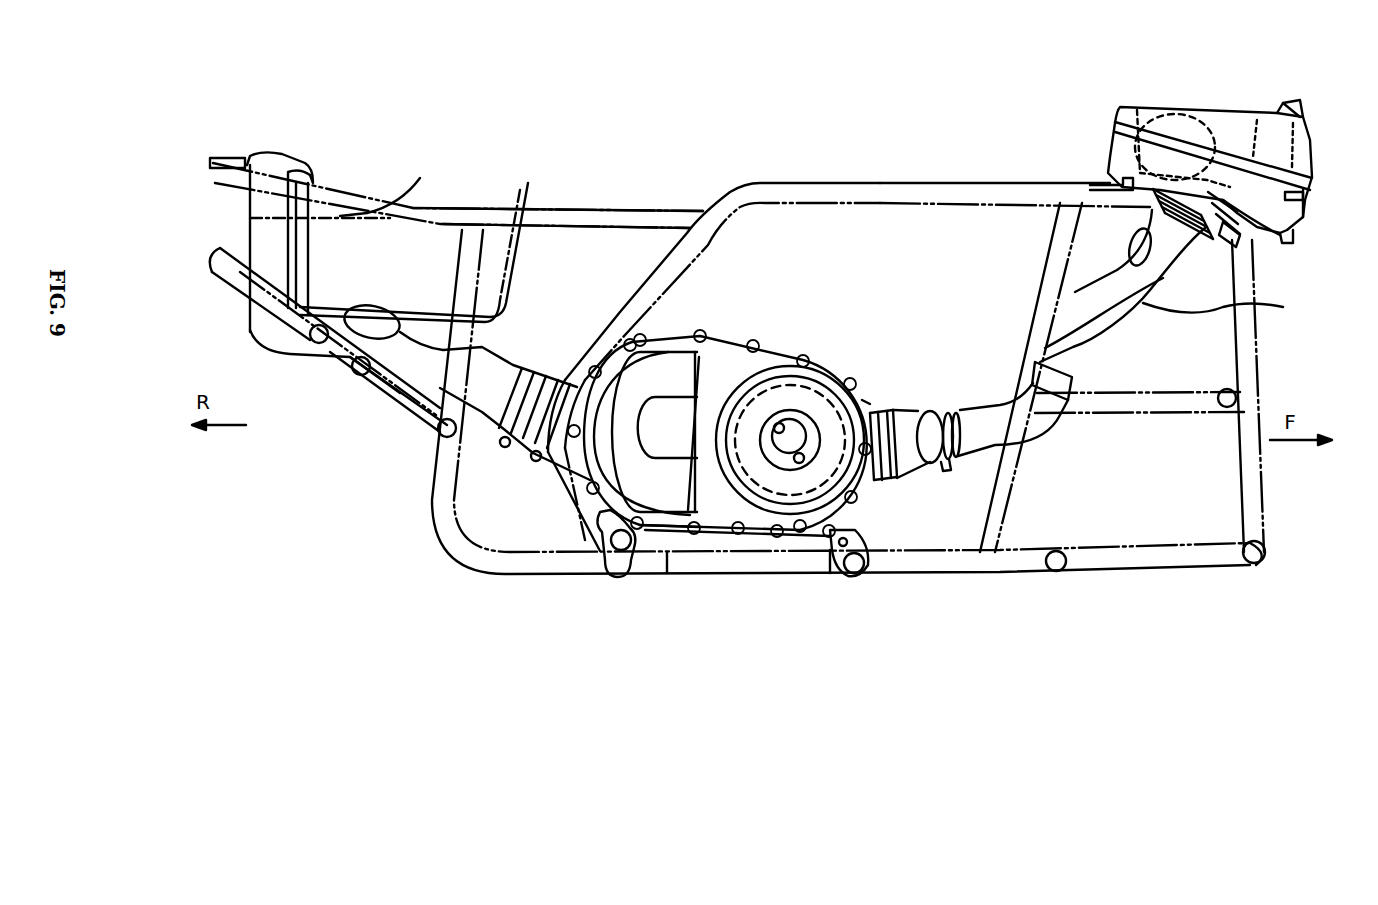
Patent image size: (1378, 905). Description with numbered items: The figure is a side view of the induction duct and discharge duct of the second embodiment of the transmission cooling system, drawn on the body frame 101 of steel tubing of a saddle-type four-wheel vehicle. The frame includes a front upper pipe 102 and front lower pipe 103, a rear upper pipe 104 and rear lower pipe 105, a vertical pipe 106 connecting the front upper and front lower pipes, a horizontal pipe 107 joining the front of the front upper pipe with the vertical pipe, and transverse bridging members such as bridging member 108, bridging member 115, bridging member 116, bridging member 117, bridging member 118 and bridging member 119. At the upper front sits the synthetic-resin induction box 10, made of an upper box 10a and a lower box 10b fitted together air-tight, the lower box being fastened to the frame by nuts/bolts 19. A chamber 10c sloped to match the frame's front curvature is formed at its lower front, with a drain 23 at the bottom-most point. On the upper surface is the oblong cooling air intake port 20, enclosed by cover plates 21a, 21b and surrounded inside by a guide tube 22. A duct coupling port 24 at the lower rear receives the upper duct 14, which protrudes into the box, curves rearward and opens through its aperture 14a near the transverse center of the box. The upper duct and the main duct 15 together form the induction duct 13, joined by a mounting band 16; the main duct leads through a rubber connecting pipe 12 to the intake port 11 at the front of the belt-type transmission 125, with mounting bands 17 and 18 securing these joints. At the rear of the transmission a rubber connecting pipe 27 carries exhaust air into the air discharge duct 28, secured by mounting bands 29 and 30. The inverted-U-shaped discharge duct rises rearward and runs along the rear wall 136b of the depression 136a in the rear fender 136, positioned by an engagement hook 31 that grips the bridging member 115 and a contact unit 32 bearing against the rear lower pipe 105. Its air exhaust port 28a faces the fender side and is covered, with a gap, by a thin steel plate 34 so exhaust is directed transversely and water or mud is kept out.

The induction box 10 is at (1243, 66).
The upper box 10a is at (1120, 108).
The lower box 10b is at (1110, 142).
The chamber 10c is at (1290, 217).
The intake port 11 is at (870, 490).
The connecting pipe 12 is at (905, 410).
The induction duct 13 is at (1316, 262).
The upper duct 14 is at (1240, 235).
The aperture 14a is at (1136, 108).
The main duct 15 is at (1222, 301).
The mounting band 16 is at (1186, 228).
The mounting band 17 is at (888, 486).
The mounting band 18 is at (950, 464).
The nuts/bolts 19 is at (1112, 185).
The cooling air intake port 20 is at (1285, 100).
The cover plate 21a is at (1307, 105).
The cover plate 21b is at (1270, 105).
The guide tube 22 is at (1300, 150).
The drain 23 is at (1288, 236).
The duct coupling port 24 is at (1162, 120).
The connecting pipe 27 is at (560, 372).
The air discharge duct 28 is at (255, 337).
The air exhaust port 28a is at (310, 182).
The mounting band 29 is at (535, 461).
The mounting band 30 is at (504, 447).
The engagement hook 31 is at (347, 374).
The contact unit 32 is at (317, 345).
The plate 34 is at (391, 182).
The body frame 101 is at (812, 183).
The front upper pipe 102 is at (920, 183).
The front lower pipe 103 is at (593, 577).
The rear upper pipe 104 is at (590, 208).
The rear lower pipe 105 is at (215, 272).
The vertical pipe 106 is at (1050, 262).
The horizontal pipe 107 is at (1158, 392).
The bridging member 108 is at (1258, 562).
The bridging member 115 is at (362, 377).
The bridging member 116 is at (440, 440).
The bridging member 117 is at (612, 577).
The bridging member 118 is at (852, 572).
The bridging member 119 is at (1056, 572).
The belt-type transmission 125 is at (782, 405).
The rear fender 136 is at (285, 158).
The depression 136a is at (440, 240).
The rear wall 136b is at (337, 180).